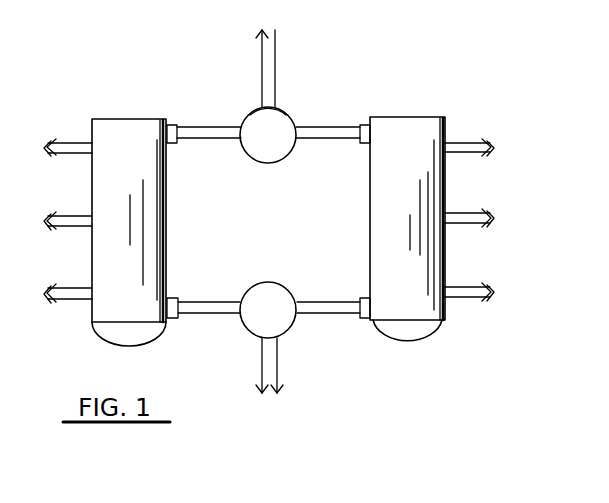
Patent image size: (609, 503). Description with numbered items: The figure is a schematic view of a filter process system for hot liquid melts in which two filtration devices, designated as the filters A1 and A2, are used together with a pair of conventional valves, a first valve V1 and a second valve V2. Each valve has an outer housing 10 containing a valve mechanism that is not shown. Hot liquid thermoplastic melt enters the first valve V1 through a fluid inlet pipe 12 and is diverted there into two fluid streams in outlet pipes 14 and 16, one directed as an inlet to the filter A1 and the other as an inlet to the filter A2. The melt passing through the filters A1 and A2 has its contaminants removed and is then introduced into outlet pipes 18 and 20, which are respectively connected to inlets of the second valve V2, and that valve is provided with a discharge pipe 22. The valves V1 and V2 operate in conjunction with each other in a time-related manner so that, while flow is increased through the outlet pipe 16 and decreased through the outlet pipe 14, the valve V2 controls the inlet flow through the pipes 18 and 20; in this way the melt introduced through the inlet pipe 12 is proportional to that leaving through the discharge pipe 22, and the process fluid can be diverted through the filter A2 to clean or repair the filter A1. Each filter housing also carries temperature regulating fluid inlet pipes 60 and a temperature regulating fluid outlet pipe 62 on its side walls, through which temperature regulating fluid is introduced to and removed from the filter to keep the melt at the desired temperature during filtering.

The outer housing 10 is at (263, 115).
The fluid inlet pipe 12 is at (264, 44).
The outlet pipe 14 is at (200, 140).
The outlet pipe 16 is at (330, 140).
The outlet pipe 18 is at (200, 302).
The outlet pipe 20 is at (320, 302).
The discharge pipe 22 is at (266, 356).
The temperature regulating fluid inlet pipes 60 is at (66, 143).
The temperature regulating fluid outlet pipe 62 is at (72, 217).
The filter A1 is at (130, 106).
The filter A2 is at (407, 95).
The first valve V1 is at (290, 102).
The second valve V2 is at (289, 334).